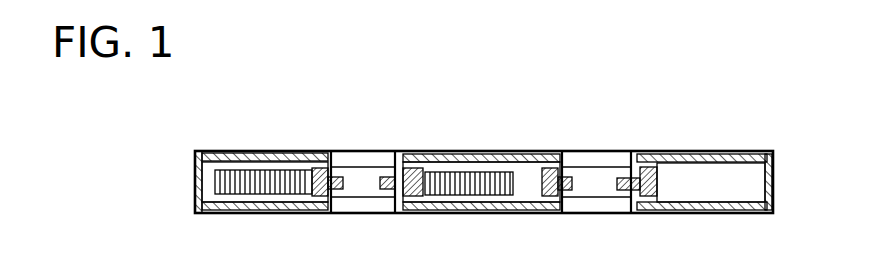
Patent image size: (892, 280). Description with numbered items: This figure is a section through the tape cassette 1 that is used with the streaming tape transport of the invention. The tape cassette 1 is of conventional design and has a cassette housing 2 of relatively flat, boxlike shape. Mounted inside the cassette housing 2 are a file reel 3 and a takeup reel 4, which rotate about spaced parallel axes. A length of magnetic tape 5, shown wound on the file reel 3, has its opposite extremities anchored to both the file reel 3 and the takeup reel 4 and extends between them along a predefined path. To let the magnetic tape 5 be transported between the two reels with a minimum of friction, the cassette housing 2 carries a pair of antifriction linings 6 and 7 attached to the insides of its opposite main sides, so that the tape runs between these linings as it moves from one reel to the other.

The tape cassette 1 is at (256, 222).
The cassette housing 2 is at (475, 152).
The file reel 3 is at (382, 197).
The takeup reel 4 is at (582, 197).
The magnetic tape 5 is at (213, 184).
The antifriction lining 6 is at (283, 152).
The antifriction lining 7 is at (283, 211).